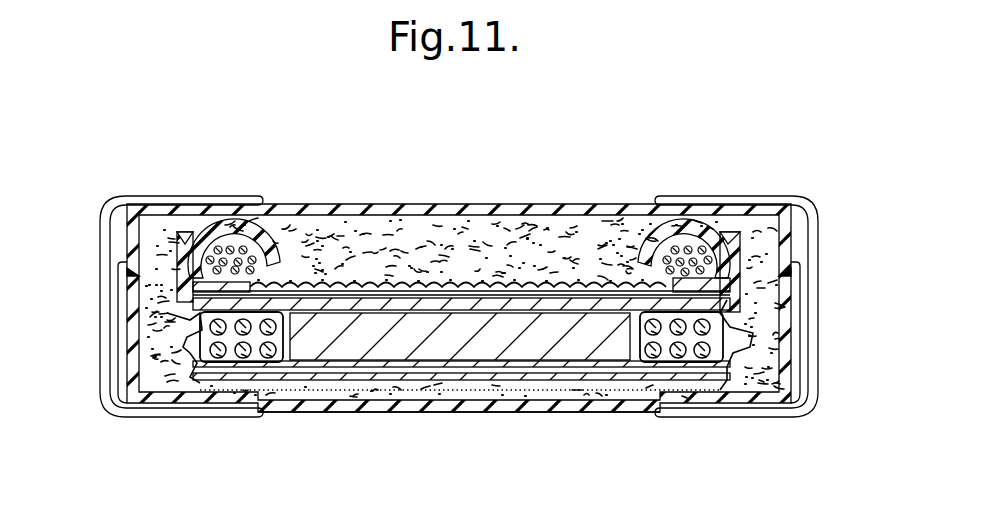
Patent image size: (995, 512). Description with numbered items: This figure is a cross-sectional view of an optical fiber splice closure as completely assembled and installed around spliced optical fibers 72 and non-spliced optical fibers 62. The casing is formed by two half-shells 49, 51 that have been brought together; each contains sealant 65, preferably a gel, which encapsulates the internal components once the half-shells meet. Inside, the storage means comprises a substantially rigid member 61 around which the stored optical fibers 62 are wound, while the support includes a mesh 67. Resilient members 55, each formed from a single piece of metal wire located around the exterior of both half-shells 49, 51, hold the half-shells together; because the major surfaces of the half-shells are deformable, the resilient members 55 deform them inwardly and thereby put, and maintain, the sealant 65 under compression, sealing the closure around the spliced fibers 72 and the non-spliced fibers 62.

The half-shell 49 is at (382, 418).
The other half-shell 51 is at (340, 204).
The resilient member 55 is at (101, 249).
The rigid member 61 is at (350, 343).
The non-spliced optical fibers 62 is at (700, 352).
The sealant 65 is at (611, 232).
The mesh 67 is at (453, 280).
The spliced optical fibers 72 is at (693, 262).